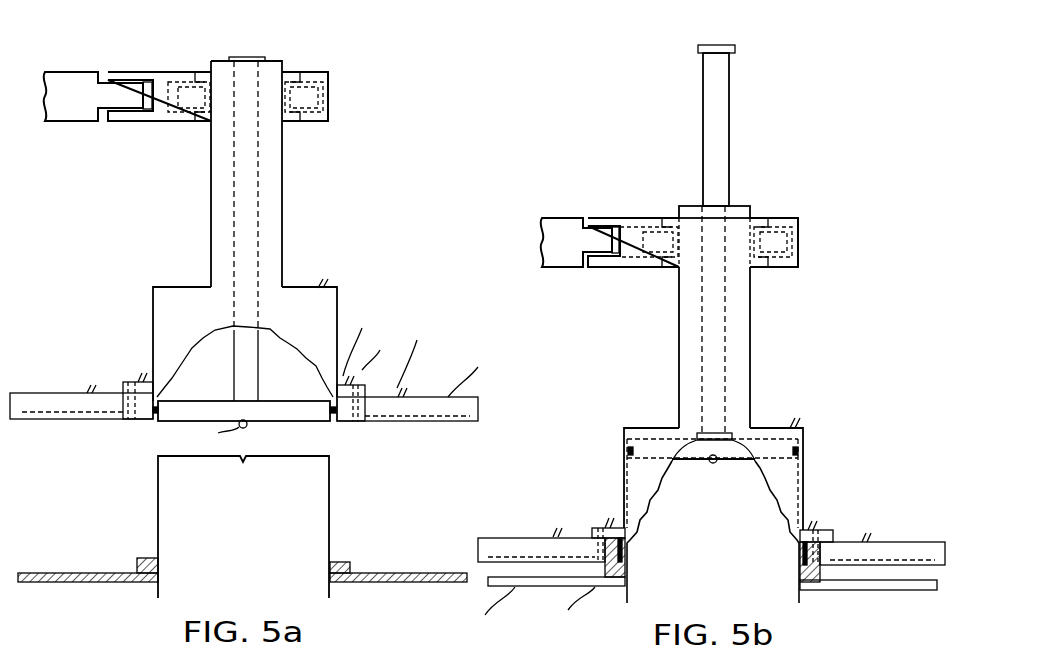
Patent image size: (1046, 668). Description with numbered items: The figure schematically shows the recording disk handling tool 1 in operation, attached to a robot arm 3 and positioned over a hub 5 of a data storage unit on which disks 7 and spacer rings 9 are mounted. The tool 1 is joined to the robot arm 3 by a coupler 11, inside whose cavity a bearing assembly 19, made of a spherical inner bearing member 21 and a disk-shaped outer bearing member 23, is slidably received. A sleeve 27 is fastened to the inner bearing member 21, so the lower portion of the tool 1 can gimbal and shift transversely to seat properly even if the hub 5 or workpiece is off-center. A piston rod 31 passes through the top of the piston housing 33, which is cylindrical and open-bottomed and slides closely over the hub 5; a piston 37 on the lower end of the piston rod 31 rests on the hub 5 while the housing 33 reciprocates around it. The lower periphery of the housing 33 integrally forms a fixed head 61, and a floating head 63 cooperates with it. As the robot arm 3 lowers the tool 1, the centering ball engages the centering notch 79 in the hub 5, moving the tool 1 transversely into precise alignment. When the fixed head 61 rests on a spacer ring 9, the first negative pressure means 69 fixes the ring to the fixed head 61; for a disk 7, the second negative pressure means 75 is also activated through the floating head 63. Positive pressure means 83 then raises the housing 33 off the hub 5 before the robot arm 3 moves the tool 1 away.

In FIG. 5a, the recording disk handling tool 1 is at (398, 292).
In FIG. 5b, the recording disk handling tool 1 is at (865, 434).
In FIG. 5a, the robot arm 3 is at (60, 71).
In FIG. 5b, the robot arm 3 is at (552, 216).
In FIG. 5a, the hub 5 is at (236, 540).
In FIG. 5b, the hub 5 is at (706, 545).
In FIG. 5a, the disk 7 is at (388, 574).
In FIG. 5a, the spacer ring 9 is at (340, 560).
In FIG. 5a, the coupler 11 is at (128, 71).
In FIG. 5b, the coupler 11 is at (617, 216).
In FIG. 5a, the bearing assembly 19 is at (284, 90).
In FIG. 5a, the inner bearing member 21 is at (209, 90).
In FIG. 5a, the outer bearing member 23 is at (305, 100).
In FIG. 5a, the sleeve 27 is at (210, 222).
In FIG. 5b, the sleeve 27 is at (752, 318).
In FIG. 5a, the piston rod 31 is at (233, 162).
In FIG. 5b, the piston rod 31 is at (730, 96).
In FIG. 5a, the piston housing 33 is at (286, 288).
In FIG. 5a, the piston 37 is at (270, 398).
In FIG. 5b, the fixed head 61 is at (600, 524).
In FIG. 5b, the floating head 63 is at (585, 525).
In FIG. 5b, the first negative pressure means 69 is at (608, 523).
In FIG. 5b, the second negative pressure means 75 is at (553, 523).
In FIG. 5a, the centering notch 79 is at (244, 459).
In FIG. 5a, the positive pressure means 83 is at (322, 280).
In FIG. 5b, the positive pressure means 83 is at (840, 378).